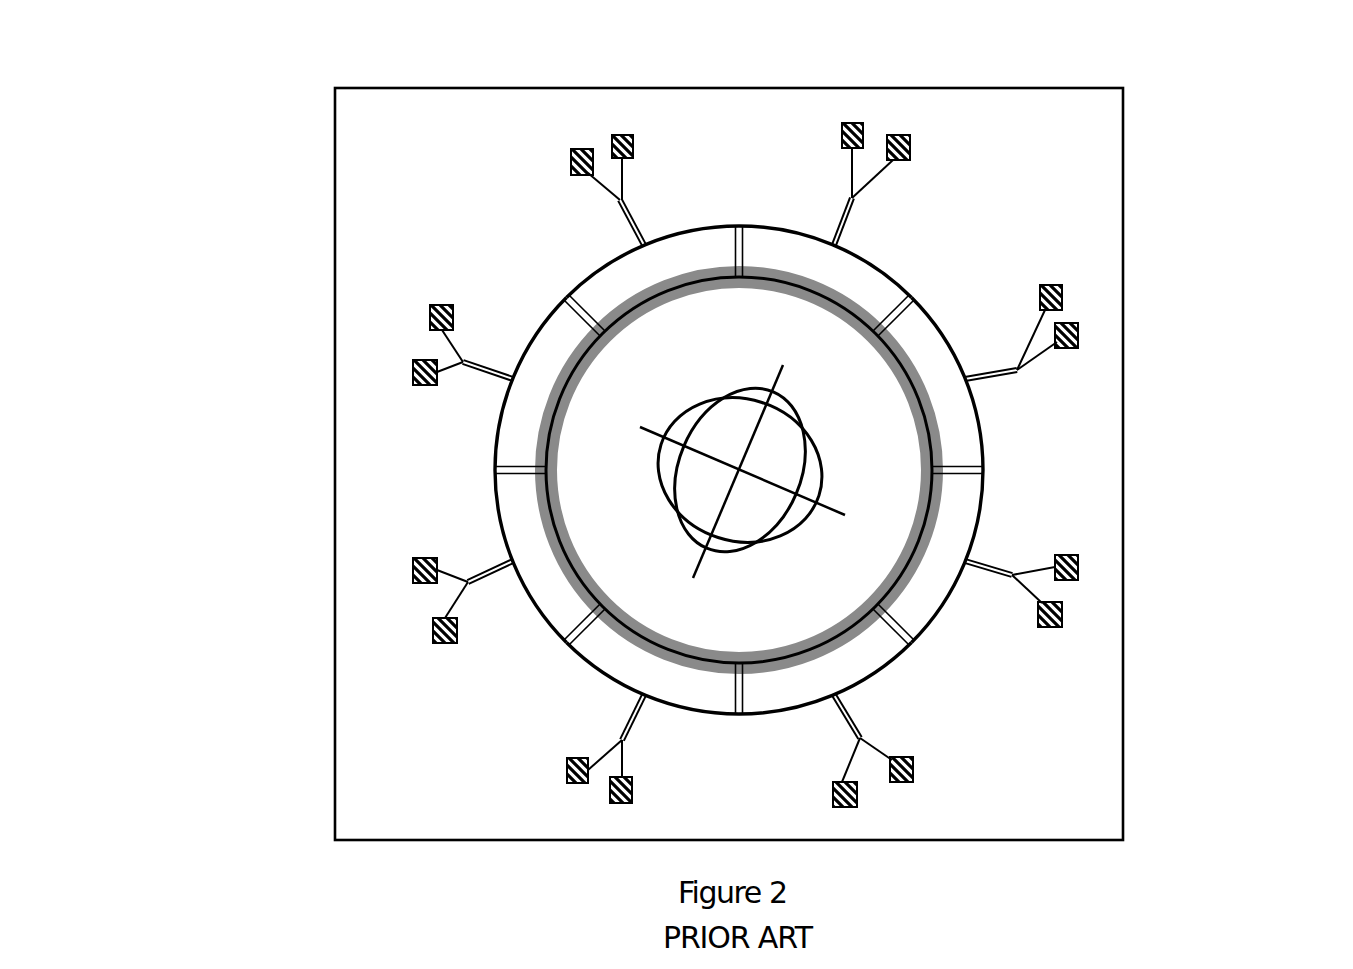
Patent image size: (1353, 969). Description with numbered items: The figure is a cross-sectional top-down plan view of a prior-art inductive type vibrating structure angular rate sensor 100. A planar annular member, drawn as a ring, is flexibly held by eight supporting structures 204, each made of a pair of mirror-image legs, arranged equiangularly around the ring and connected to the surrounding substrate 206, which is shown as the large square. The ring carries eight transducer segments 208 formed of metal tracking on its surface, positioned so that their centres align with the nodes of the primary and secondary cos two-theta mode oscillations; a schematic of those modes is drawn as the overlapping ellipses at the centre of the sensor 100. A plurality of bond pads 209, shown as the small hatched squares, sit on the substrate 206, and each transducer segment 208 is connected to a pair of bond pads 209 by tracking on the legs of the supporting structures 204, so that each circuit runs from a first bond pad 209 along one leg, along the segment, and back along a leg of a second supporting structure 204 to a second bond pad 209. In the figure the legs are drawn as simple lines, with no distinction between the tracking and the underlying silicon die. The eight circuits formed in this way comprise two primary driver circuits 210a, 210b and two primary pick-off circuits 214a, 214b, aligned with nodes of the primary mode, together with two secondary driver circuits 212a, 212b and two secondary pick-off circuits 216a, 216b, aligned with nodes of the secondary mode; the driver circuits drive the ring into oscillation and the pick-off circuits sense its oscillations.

The inductive type vibrating structure angular rate sensor 100 is at (750, 434).
The supporting structures 204 is at (787, 227).
The substrate 206 is at (995, 215).
The transducer segments 208 is at (840, 295).
The bond pads 209 is at (1080, 563).
The primary driver circuit 210a is at (857, 240).
The primary driver circuit 210b is at (600, 700).
The secondary driver circuit 212a is at (990, 400).
The secondary driver circuit 212b is at (487, 541).
The primary pick-off circuit 214a is at (1094, 556).
The primary pick-off circuit 214b is at (483, 413).
The secondary pick-off circuit 216a is at (865, 705).
The secondary pick-off circuit 216b is at (597, 248).